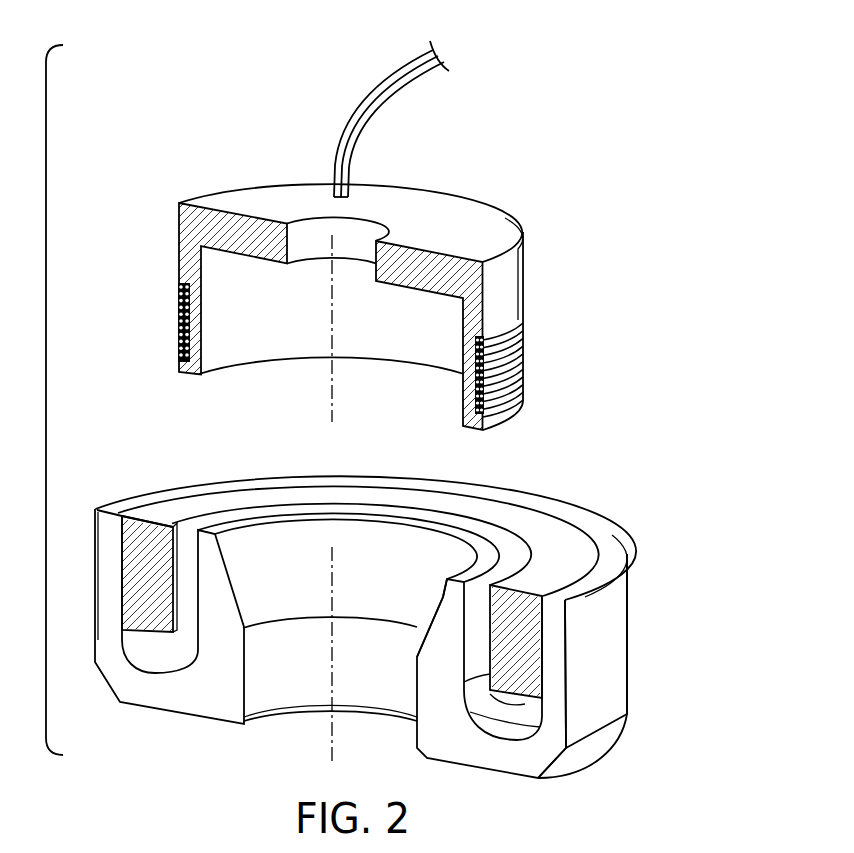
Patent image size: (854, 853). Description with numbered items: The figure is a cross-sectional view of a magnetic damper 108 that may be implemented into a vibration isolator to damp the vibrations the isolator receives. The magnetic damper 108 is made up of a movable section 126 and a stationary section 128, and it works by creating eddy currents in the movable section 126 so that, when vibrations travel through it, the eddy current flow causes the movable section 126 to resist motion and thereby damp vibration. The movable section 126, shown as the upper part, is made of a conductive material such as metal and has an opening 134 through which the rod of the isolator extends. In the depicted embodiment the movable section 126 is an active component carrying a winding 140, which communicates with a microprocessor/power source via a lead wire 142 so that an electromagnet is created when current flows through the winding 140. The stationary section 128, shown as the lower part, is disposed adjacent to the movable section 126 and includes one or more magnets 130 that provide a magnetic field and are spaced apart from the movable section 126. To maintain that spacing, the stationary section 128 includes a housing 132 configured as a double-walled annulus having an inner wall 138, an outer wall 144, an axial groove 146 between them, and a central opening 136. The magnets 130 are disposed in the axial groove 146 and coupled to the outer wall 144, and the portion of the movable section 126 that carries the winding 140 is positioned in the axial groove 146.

The magnetic damper 108 is at (530, 97).
The movable section 126 is at (517, 207).
The stationary section 128 is at (650, 567).
The magnets 130 is at (524, 596).
The housing 132 is at (553, 672).
The opening 134 is at (347, 248).
The central opening 136 is at (270, 552).
The inner wall 138 is at (452, 613).
The winding 140 is at (523, 361).
The lead wire 142 is at (348, 98).
The outer wall 144 is at (556, 645).
The axial groove 146 is at (508, 547).